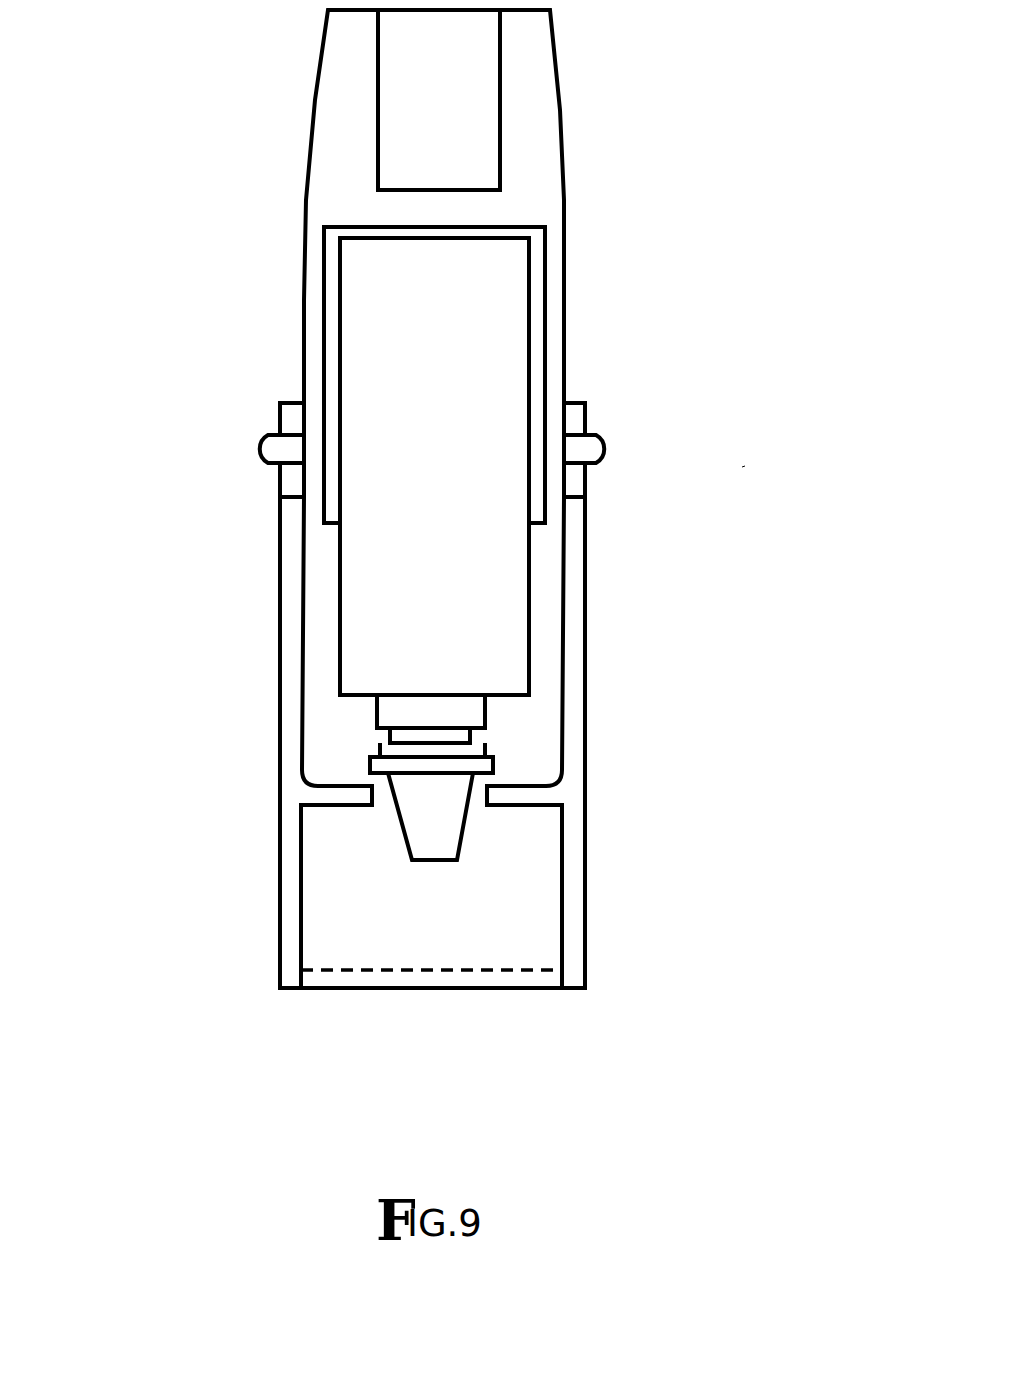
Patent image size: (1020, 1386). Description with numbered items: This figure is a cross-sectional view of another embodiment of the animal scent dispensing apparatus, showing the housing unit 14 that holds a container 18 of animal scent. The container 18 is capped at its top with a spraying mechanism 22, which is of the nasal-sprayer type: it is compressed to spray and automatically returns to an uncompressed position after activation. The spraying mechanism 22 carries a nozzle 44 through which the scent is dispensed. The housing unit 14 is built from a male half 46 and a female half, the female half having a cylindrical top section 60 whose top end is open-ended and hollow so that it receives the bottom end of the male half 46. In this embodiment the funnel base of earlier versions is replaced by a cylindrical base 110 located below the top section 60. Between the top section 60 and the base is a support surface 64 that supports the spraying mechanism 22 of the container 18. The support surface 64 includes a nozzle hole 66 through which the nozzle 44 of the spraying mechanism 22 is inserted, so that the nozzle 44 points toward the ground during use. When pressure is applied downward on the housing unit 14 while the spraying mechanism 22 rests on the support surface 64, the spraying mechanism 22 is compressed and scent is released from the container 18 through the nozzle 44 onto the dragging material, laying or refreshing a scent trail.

The housing unit 14 is at (742, 467).
The container 18 is at (450, 447).
The spraying mechanism 22 is at (377, 713).
The nozzle 44 is at (443, 813).
The male half 46 is at (567, 213).
The cylindrical top section 60 is at (585, 690).
The support surface 64 is at (332, 810).
The nozzle hole 66 is at (474, 806).
The cylindrical base 110 is at (585, 898).